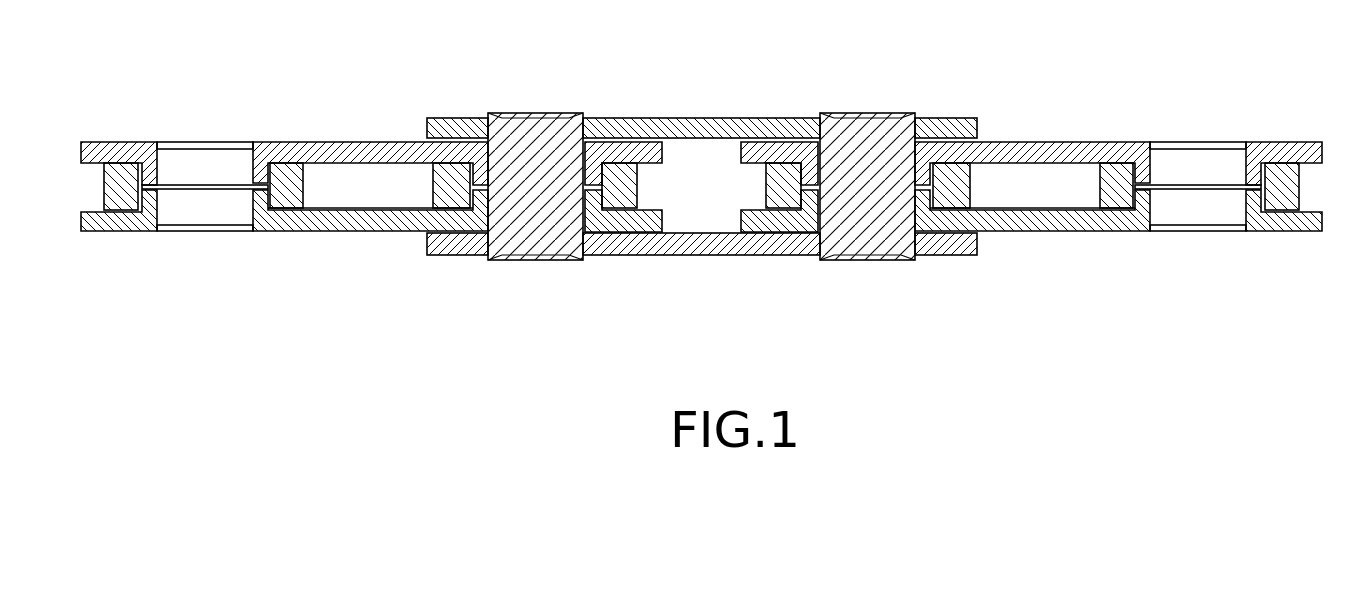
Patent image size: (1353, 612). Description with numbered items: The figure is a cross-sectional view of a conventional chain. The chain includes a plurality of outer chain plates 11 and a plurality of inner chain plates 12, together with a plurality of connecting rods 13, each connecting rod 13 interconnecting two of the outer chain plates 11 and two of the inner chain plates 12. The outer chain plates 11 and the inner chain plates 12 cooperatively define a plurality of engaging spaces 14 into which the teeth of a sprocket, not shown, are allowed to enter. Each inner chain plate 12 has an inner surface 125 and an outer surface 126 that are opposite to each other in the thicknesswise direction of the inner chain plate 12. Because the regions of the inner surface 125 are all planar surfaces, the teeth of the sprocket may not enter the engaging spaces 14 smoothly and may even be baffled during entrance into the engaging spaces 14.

The outer chain plate 11 is at (961, 128).
The inner chain plate 12 is at (701, 199).
The inner surface 125 is at (1015, 177).
The outer surface 126 is at (1053, 145).
The connecting rod 13 is at (530, 228).
The engaging space 14 is at (333, 178).